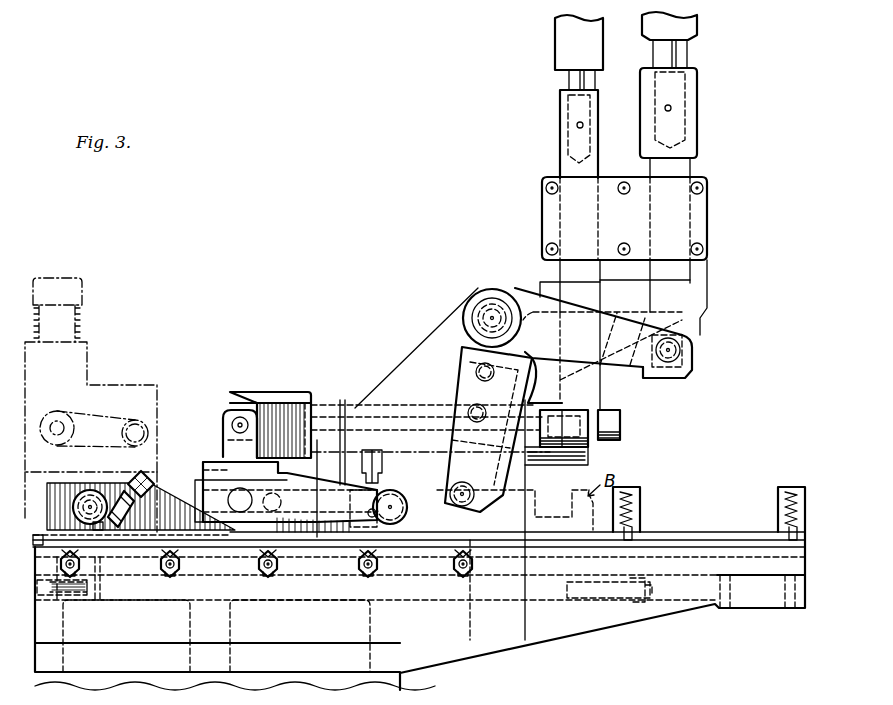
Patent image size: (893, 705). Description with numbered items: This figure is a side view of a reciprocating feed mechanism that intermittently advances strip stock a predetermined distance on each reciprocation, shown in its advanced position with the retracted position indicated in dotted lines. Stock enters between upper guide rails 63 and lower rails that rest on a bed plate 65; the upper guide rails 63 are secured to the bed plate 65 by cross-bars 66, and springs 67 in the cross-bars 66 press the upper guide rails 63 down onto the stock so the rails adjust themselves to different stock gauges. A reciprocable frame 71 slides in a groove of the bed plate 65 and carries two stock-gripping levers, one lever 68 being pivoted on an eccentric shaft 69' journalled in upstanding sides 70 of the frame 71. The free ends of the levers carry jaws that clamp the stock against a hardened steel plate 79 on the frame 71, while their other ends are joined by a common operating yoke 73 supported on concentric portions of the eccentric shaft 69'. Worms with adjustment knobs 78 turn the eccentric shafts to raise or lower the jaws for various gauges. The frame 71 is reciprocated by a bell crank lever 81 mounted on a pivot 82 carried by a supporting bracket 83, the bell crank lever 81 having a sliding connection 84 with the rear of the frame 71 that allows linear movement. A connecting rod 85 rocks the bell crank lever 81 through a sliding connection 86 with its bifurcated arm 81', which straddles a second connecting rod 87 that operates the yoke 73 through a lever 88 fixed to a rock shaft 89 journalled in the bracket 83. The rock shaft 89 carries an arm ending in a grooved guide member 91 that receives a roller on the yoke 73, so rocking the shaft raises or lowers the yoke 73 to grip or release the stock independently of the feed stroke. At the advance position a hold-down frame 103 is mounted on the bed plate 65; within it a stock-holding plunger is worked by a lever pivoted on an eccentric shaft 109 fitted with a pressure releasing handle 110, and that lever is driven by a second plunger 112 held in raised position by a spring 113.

The upper guide rails 63 is at (553, 538).
The bed plate 65 is at (180, 597).
The cross-bars 66 is at (648, 492).
The springs 67 is at (632, 512).
The lever 68 is at (182, 480).
The eccentric shaft 69' is at (394, 496).
The upstanding sides 70 is at (75, 480).
The reciprocable frame 71 is at (225, 578).
The operating yoke 73 is at (228, 435).
The adjustment knobs 78 is at (150, 472).
The hardened steel plate 79 is at (140, 555).
The bell crank lever 81 is at (443, 400).
The arm 81' is at (591, 387).
The pivot 82 is at (492, 318).
The supporting bracket 83 is at (443, 333).
The sliding connection 84 is at (378, 456).
The connecting rod 85 is at (695, 145).
The sliding connection 86 is at (670, 362).
The connecting rod 87 is at (565, 143).
The lever 88 is at (608, 447).
The rock shaft 89 is at (400, 417).
The grooved guide member 91 is at (260, 392).
The frame 103 is at (117, 397).
The eccentric shaft 109 is at (143, 452).
The pressure releasing handle 110 is at (103, 418).
The plunger 112 is at (78, 297).
The spring 113 is at (77, 325).